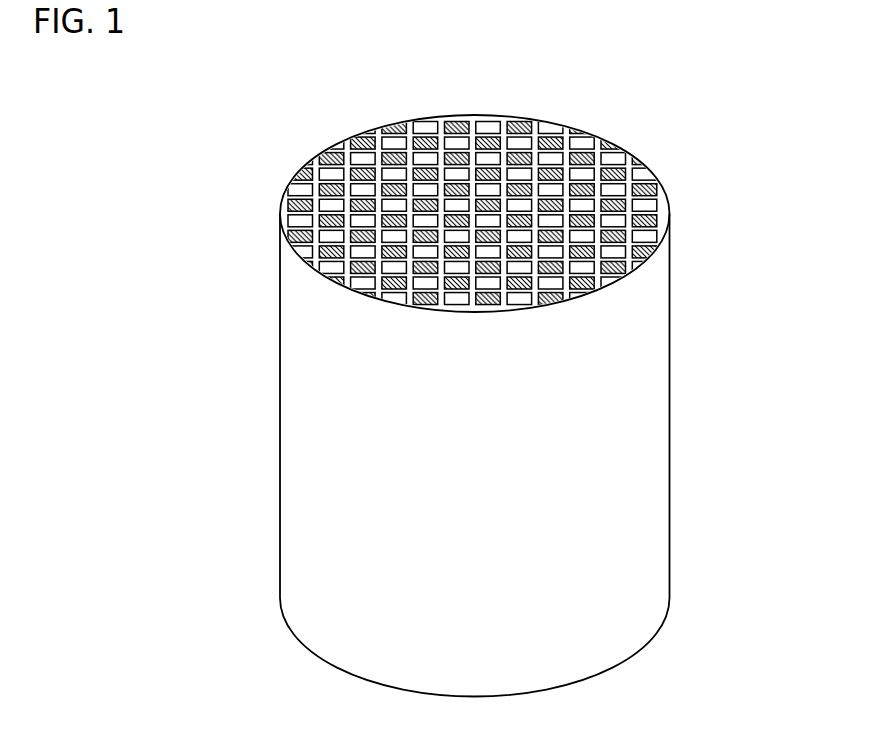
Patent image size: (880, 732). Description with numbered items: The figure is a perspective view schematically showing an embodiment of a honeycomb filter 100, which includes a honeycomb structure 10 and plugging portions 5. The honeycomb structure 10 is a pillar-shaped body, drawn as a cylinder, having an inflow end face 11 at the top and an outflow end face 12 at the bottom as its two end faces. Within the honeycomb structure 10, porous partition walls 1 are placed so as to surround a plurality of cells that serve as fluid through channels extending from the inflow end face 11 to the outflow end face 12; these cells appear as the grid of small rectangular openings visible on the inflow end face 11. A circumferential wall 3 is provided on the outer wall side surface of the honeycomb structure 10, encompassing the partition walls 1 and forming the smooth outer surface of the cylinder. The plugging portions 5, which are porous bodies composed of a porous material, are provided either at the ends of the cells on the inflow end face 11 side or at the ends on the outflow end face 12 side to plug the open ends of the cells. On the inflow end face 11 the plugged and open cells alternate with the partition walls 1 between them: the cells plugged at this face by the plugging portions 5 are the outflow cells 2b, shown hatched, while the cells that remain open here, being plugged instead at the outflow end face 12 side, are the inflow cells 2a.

The honeycomb filter 100 is at (806, 67).
The honeycomb structure 10 is at (676, 256).
The partition walls 1 is at (567, 177).
The inflow cells 2a is at (580, 205).
The outflow cells 2b is at (603, 237).
The circumferential wall 3 is at (638, 349).
The plugging portions 5 is at (509, 131).
The inflow end face 11 is at (349, 130).
The outflow end face 12 is at (302, 661).